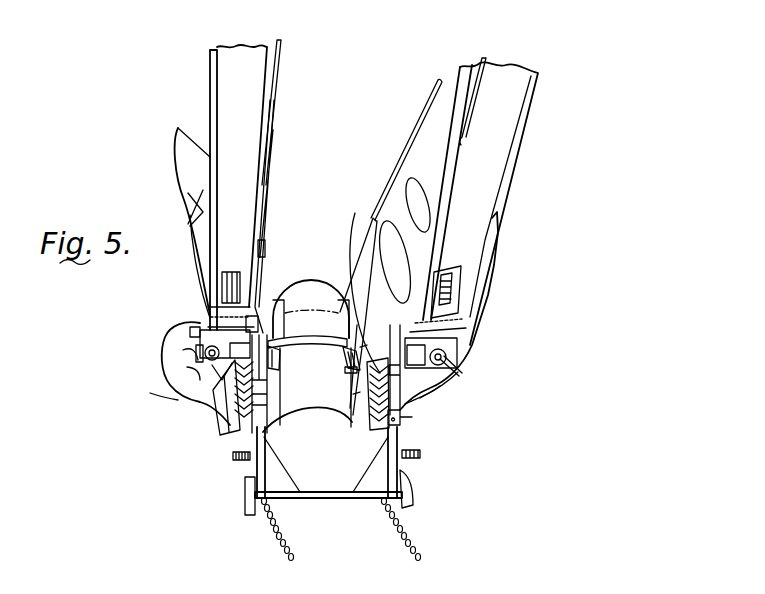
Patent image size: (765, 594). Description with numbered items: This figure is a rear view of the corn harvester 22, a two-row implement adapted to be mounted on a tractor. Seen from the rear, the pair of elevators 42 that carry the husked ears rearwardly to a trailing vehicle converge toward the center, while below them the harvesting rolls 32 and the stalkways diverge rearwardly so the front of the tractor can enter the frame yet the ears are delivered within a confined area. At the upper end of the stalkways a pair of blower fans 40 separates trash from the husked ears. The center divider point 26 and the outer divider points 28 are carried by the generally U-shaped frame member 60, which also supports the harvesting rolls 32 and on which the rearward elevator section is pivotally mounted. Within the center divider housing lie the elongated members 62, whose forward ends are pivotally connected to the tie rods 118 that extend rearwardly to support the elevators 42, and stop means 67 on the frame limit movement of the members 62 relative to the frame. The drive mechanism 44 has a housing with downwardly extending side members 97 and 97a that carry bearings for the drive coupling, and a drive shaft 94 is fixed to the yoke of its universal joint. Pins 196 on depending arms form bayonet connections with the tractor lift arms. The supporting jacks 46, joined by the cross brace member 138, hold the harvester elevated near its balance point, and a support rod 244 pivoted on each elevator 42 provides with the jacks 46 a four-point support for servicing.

The elevator 42 is at (212, 81).
The support rod 244 is at (278, 79).
The tie rod 118 is at (268, 183).
The blower fan 40 is at (382, 207).
The corn harvester 22 is at (313, 278).
The side member 97 is at (250, 328).
The side member 97a is at (193, 332).
The drive mechanism 44 is at (194, 342).
The drive shaft 94 is at (200, 357).
The outer divider point 28 is at (180, 390).
The harvesting roll 32 is at (248, 433).
The stop means 67 is at (273, 354).
The elongated spaced-apart member 62 is at (348, 358).
The center divider point 26 is at (310, 400).
The U-shaped frame member 60 is at (425, 408).
The pin 196 is at (410, 420).
The supporting jack 46 is at (240, 488).
The cross brace member 138 is at (312, 494).